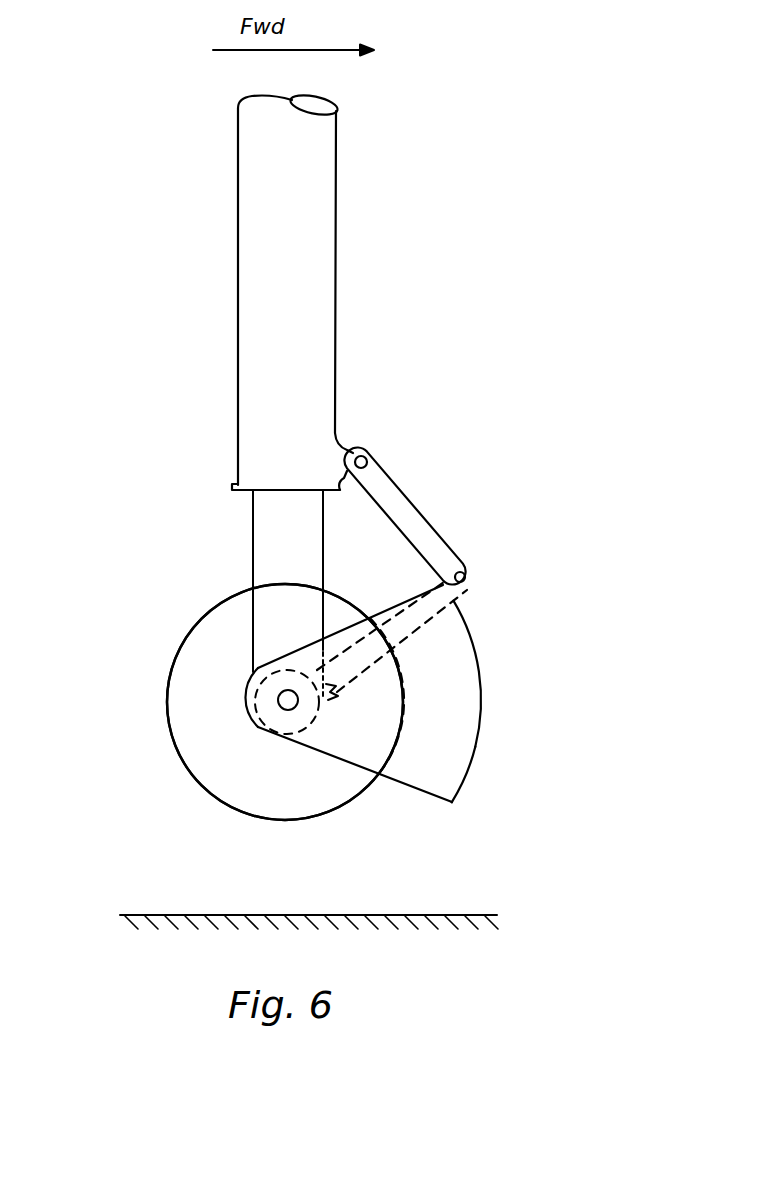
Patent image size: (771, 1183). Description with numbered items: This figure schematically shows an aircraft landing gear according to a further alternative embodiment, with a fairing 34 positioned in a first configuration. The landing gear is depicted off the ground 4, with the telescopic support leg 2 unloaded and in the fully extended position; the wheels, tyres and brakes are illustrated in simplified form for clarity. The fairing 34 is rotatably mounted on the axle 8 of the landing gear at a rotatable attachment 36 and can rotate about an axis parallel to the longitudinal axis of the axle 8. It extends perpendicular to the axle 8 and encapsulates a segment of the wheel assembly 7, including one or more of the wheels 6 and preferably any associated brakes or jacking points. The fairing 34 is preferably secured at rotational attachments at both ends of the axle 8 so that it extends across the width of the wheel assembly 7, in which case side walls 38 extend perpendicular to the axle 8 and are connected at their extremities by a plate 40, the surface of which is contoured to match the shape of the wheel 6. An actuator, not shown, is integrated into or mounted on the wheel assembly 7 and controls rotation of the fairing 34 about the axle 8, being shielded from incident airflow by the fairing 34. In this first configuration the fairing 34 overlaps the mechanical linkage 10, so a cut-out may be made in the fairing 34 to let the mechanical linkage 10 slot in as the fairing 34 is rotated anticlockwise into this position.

The telescopic support leg 2 is at (335, 338).
The ground 4 is at (435, 913).
The wheel 6 is at (205, 728).
The wheel assembly 7 is at (233, 597).
The axle 8 is at (253, 668).
The mechanical linkage 10 is at (440, 535).
The fairing 34 is at (483, 677).
The rotatable attachment 36 is at (288, 700).
The side wall 38 is at (460, 733).
The plate 40 is at (470, 773).